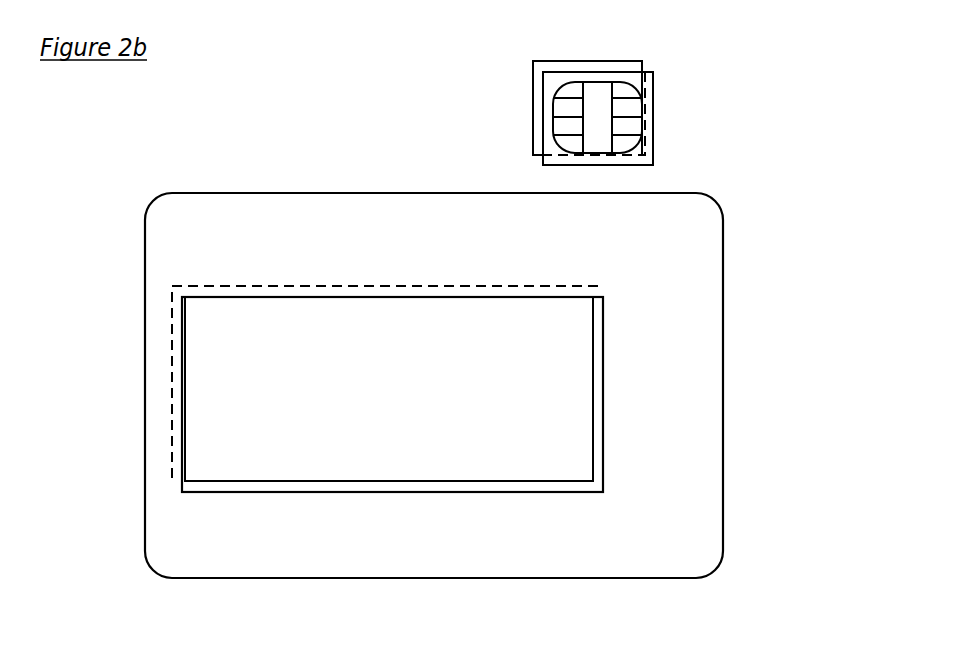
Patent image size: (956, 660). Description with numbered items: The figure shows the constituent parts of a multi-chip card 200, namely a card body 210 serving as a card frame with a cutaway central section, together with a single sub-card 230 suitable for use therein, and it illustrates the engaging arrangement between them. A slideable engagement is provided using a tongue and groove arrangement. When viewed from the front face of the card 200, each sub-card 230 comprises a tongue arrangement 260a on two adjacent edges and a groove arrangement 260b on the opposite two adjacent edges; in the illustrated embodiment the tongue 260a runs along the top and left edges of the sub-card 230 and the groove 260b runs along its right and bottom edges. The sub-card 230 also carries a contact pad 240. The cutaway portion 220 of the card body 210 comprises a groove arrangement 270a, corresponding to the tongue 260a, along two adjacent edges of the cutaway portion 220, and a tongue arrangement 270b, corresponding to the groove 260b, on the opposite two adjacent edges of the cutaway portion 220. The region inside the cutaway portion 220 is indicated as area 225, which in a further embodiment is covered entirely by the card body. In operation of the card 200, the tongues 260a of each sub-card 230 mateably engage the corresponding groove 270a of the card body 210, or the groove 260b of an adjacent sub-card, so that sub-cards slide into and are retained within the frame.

The card 200 is at (727, 183).
The card body 210 is at (302, 192).
The cutaway portion 220 is at (603, 343).
The area 225 is at (392, 395).
The sub-card 230 is at (622, 45).
The chip contact pad 240 is at (597, 117).
The tongue arrangement 260a is at (548, 60).
The groove arrangement 260b is at (658, 133).
The groove arrangement 270a is at (302, 286).
The tongue arrangement 270b is at (597, 432).